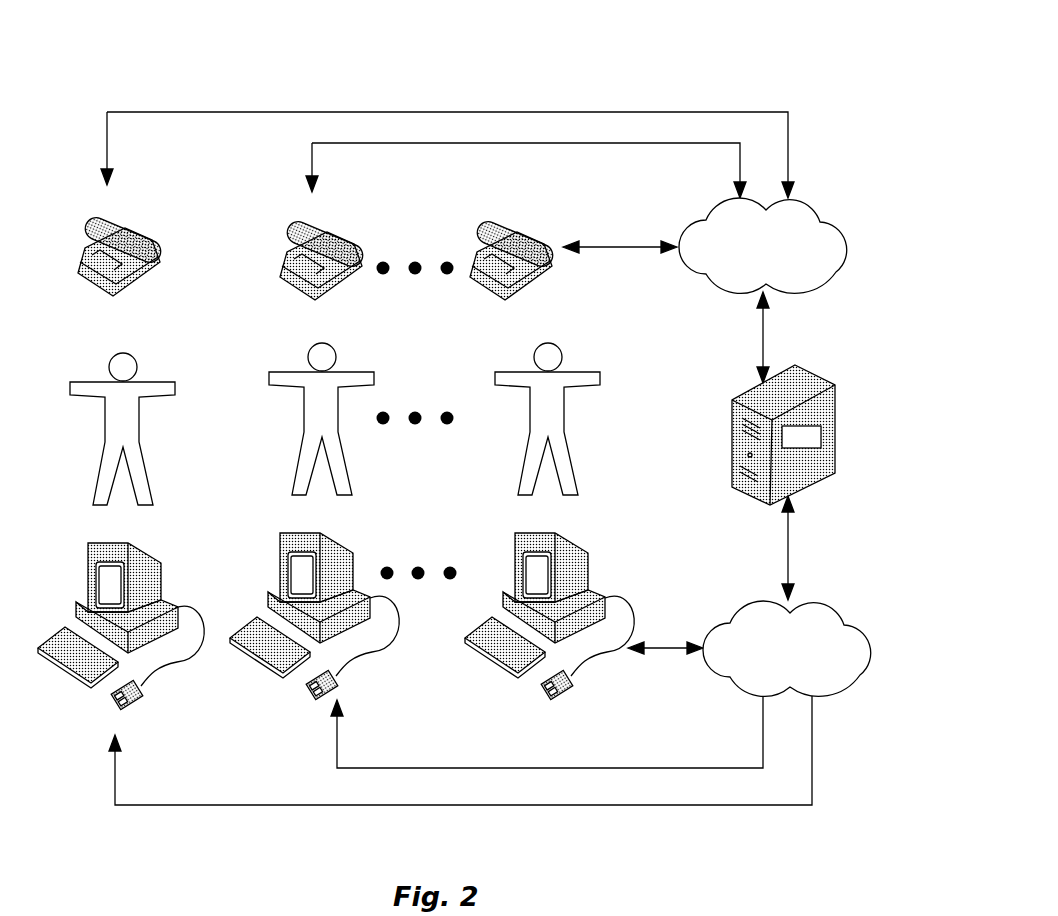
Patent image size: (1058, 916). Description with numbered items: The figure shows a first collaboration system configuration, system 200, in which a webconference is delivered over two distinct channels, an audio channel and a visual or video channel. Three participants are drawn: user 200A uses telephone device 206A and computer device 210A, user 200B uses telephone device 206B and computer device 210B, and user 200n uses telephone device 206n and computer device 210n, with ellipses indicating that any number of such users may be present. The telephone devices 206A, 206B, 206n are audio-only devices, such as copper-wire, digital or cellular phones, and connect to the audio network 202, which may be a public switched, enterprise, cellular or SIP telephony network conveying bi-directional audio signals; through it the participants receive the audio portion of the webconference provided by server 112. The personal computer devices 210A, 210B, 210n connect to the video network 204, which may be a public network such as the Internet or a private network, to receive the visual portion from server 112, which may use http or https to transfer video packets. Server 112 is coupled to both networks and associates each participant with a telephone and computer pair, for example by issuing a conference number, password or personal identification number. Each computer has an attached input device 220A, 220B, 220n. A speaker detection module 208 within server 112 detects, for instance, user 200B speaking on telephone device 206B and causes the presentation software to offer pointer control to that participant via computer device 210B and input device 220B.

The system 200 is at (728, 51).
The audio network 202 is at (812, 204).
The video network 204 is at (836, 606).
The server 112 is at (809, 424).
The speaker detection module 208 is at (805, 448).
The telephone device 206A is at (130, 220).
The telephone device 206B is at (338, 236).
The telephone device 206n is at (530, 232).
The user 200A is at (136, 362).
The user 200B is at (335, 352).
The user 200n is at (561, 352).
The computer device 210A is at (161, 563).
The computer device 210B is at (353, 553).
The computer device 210n is at (588, 553).
The input device 220A is at (142, 700).
The input device 220B is at (337, 690).
The input device 220n is at (572, 690).